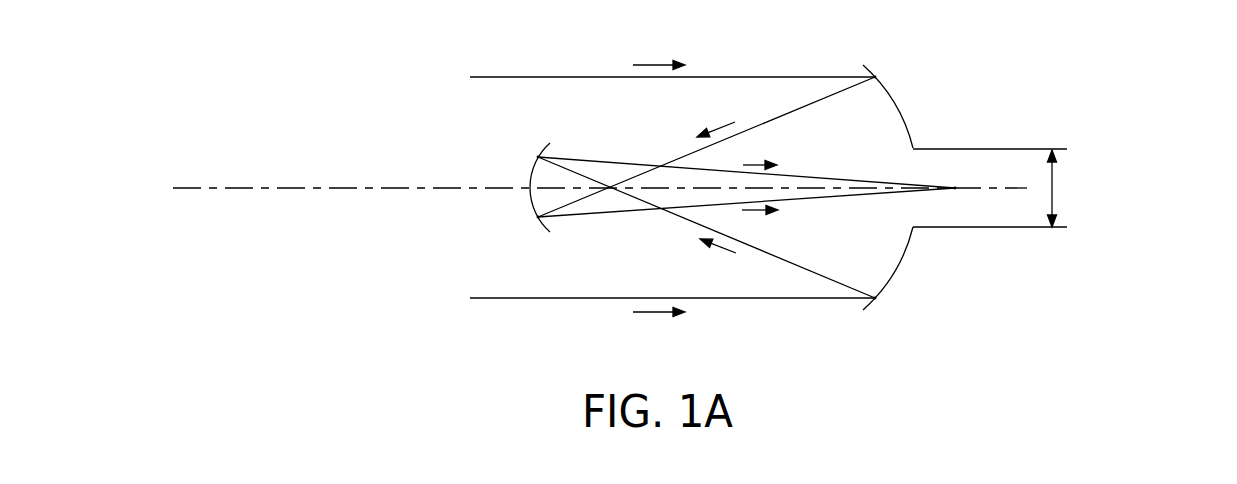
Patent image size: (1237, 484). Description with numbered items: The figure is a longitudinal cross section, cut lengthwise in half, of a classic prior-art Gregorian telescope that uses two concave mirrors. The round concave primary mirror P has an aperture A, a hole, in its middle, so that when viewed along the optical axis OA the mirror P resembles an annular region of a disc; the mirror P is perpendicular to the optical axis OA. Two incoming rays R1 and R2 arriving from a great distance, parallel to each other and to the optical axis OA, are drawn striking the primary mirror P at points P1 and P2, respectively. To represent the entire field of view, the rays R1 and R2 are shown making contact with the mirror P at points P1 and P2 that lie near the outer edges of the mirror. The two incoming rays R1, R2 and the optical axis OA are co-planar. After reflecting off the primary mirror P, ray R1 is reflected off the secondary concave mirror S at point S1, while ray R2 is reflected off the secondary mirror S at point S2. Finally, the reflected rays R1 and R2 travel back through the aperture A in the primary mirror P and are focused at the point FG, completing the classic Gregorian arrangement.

The optical axis OA is at (267, 188).
The secondary concave mirror S is at (529, 172).
The point S1 is at (538, 217).
The point S2 is at (538, 157).
The incoming ray R1 is at (535, 77).
The incoming ray R2 is at (595, 162).
The primary mirror P is at (905, 110).
The point P1 is at (880, 76).
The point P2 is at (880, 299).
The focus point FG is at (980, 173).
The aperture A is at (1056, 190).